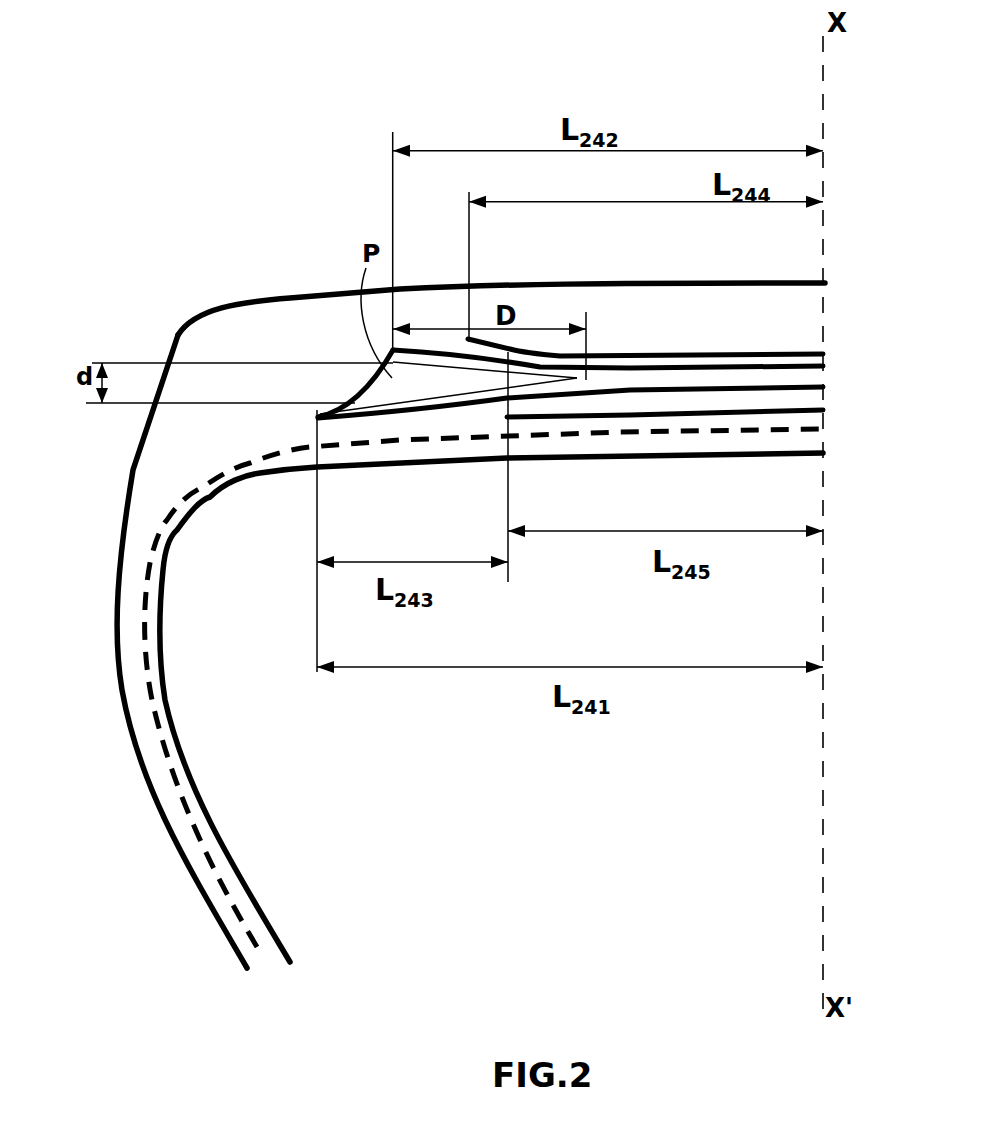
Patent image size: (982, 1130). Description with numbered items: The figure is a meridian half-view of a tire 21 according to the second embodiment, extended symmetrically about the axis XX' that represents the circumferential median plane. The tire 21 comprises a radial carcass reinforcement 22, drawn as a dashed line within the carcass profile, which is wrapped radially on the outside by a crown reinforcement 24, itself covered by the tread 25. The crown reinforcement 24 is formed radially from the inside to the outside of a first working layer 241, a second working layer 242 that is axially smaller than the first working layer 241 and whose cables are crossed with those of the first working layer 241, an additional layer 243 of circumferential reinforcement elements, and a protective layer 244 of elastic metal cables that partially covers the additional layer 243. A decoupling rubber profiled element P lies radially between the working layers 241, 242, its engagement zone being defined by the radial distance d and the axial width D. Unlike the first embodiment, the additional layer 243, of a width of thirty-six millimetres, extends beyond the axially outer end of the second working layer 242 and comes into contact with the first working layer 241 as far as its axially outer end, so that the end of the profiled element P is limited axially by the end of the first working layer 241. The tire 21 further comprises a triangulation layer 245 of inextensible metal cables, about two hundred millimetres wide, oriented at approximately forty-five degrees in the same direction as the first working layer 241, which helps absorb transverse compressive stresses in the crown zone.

The tire 21 is at (82, 291).
The carcass reinforcement 22 is at (150, 563).
The crown reinforcement 24 is at (597, 373).
The tread 25 is at (722, 300).
The first working layer 241 is at (790, 391).
The second working layer 242 is at (766, 366).
The additional layer 243 is at (346, 401).
The protective layer 244 is at (660, 352).
The triangulation layer 245 is at (508, 418).